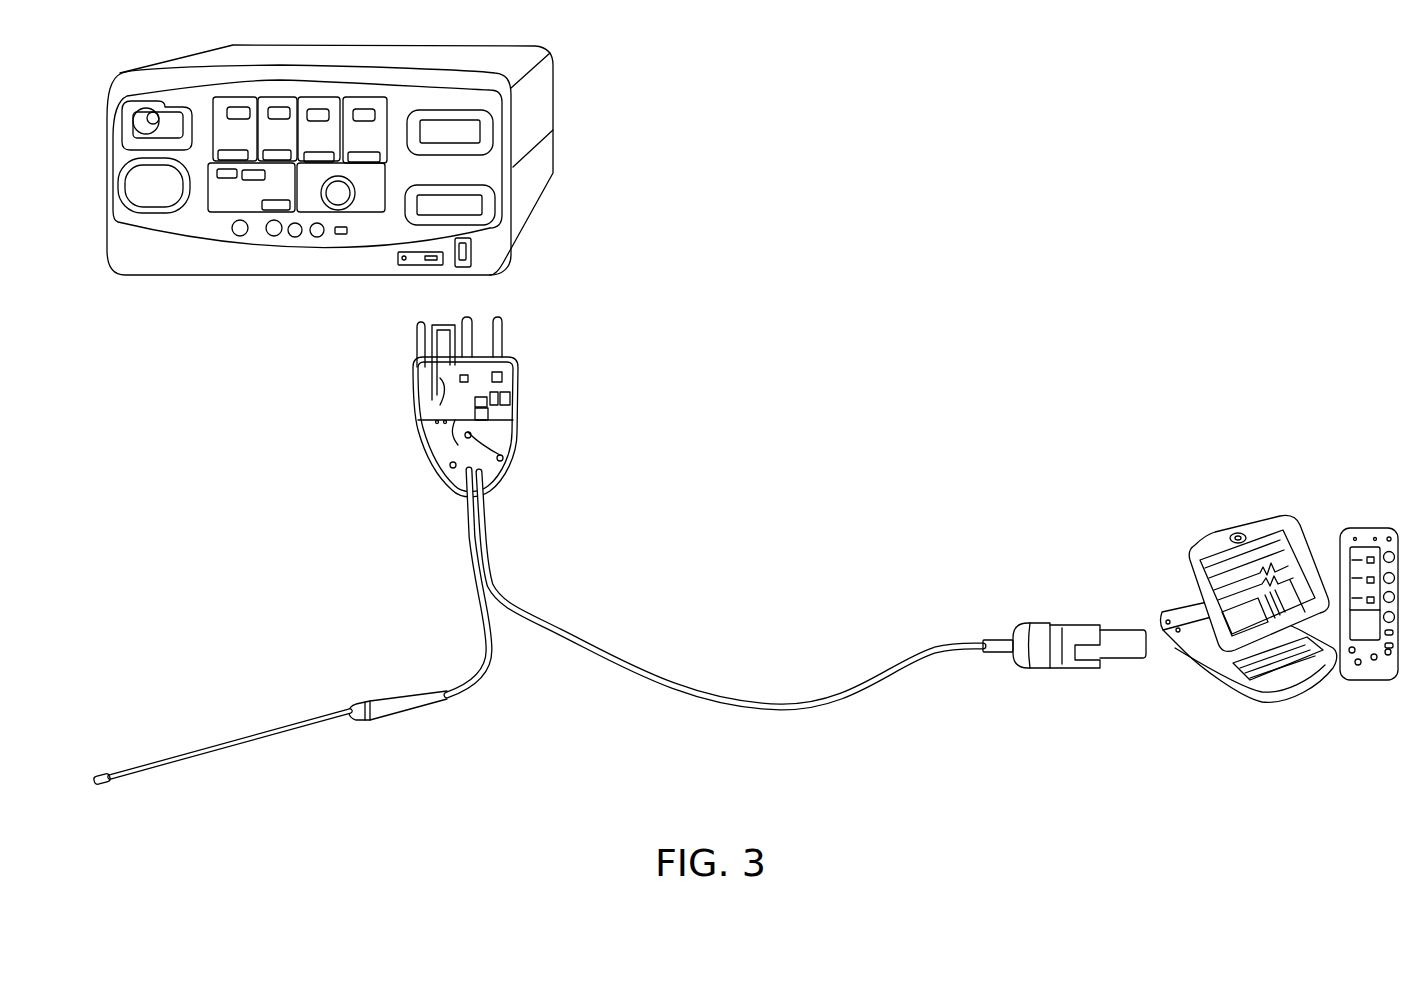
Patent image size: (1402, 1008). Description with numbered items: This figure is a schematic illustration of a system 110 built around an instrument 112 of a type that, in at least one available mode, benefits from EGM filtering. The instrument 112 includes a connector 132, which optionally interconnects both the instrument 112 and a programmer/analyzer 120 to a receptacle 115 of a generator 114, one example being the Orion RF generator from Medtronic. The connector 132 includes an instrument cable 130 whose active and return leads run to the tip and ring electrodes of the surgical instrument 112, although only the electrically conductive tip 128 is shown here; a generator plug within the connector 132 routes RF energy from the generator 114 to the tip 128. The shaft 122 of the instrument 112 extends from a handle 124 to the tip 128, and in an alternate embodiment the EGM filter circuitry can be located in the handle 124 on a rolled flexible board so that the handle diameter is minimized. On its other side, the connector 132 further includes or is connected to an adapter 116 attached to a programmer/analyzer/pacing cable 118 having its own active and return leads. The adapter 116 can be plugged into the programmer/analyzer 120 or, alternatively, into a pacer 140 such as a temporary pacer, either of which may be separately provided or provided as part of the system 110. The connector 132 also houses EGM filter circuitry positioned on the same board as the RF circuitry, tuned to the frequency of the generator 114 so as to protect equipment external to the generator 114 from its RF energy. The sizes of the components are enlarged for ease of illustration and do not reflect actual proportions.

The system 110 is at (983, 158).
The instrument 112 is at (300, 714).
The generator 114 is at (553, 95).
The receptacle 115 is at (485, 205).
The adapter 116 is at (1057, 625).
The programmer/analyzer/pacing cable 118 is at (617, 660).
The programmer/analyzer 120 is at (1213, 535).
The shaft 122 is at (235, 748).
The handle 124 is at (380, 713).
The electrically conductive tip 128 is at (102, 775).
The instrument cable 130 is at (488, 663).
The connector 132 is at (518, 435).
The pacer 140 is at (1363, 528).